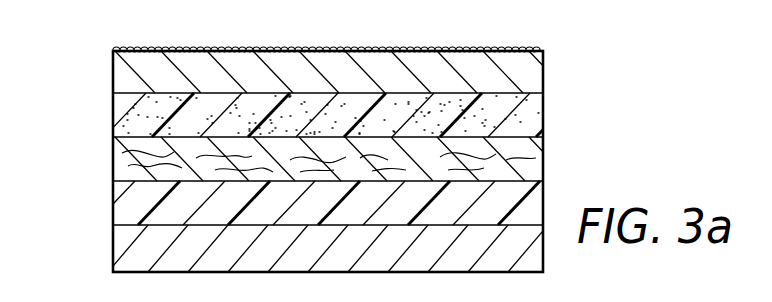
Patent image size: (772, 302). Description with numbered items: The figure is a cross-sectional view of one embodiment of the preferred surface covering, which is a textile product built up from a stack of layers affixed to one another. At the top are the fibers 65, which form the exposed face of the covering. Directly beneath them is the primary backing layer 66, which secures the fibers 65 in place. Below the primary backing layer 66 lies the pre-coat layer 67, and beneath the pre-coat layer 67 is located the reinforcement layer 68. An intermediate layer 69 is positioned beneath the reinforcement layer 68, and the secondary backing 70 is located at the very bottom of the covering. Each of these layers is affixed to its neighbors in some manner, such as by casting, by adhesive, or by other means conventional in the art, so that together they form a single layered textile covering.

The fibers 65 is at (503, 50).
The primary backing layer 66 is at (118, 72).
The pre-coat layer 67 is at (126, 118).
The reinforcement layer 68 is at (118, 156).
The intermediate layer 69 is at (120, 201).
The secondary backing 70 is at (118, 254).